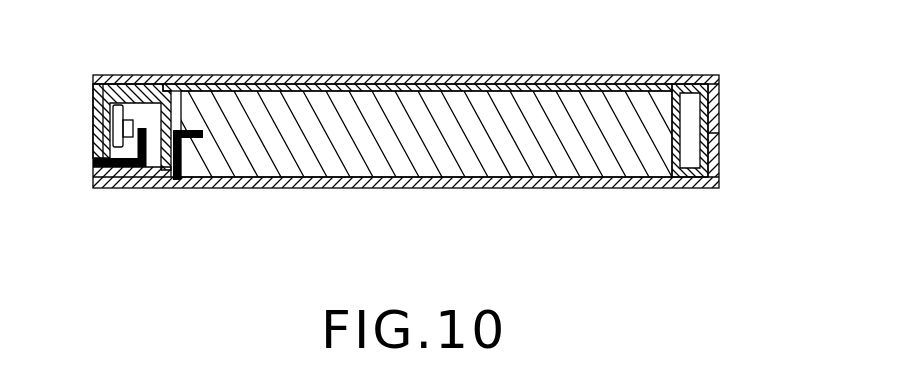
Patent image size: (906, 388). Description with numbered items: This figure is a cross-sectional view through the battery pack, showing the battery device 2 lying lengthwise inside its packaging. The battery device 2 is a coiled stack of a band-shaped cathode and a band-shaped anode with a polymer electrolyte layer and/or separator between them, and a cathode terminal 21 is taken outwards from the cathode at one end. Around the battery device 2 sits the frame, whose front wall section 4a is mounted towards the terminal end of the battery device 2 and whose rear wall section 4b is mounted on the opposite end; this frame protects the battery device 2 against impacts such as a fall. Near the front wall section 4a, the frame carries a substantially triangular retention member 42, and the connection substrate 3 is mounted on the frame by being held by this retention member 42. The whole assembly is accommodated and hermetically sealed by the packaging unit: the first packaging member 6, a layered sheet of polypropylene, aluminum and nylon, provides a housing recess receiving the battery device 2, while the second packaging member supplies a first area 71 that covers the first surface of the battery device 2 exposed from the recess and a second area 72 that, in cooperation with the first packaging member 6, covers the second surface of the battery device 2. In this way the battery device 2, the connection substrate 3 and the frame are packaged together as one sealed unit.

The battery device 2 is at (475, 122).
The connection substrate 3 is at (133, 118).
The front wall section 4a is at (113, 88).
The rear wall section 4b is at (690, 102).
The first packaging member 6 is at (282, 88).
The cathode terminal 21 is at (113, 185).
The retention member 42 is at (150, 105).
The first area 71 is at (317, 185).
The second area 72 is at (383, 80).